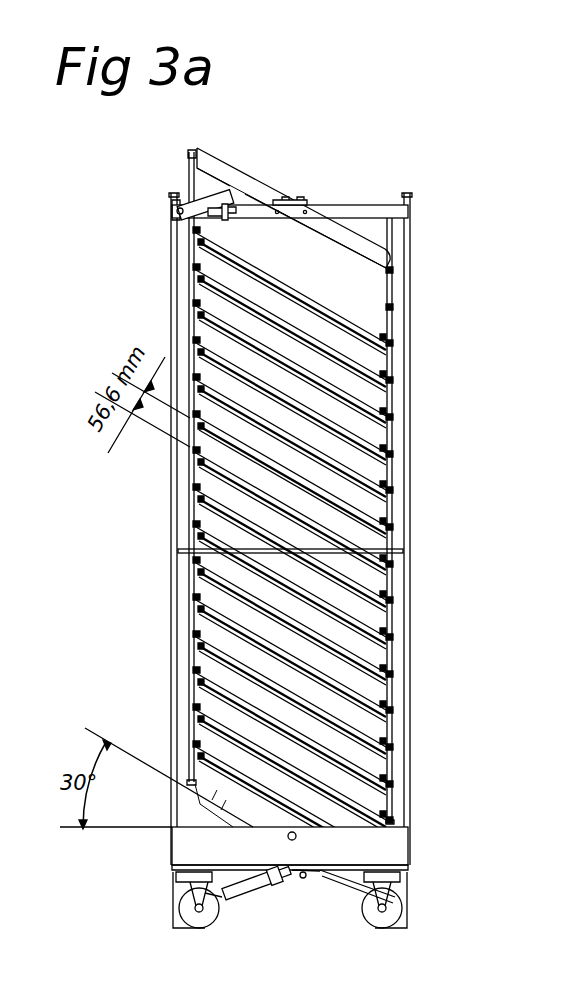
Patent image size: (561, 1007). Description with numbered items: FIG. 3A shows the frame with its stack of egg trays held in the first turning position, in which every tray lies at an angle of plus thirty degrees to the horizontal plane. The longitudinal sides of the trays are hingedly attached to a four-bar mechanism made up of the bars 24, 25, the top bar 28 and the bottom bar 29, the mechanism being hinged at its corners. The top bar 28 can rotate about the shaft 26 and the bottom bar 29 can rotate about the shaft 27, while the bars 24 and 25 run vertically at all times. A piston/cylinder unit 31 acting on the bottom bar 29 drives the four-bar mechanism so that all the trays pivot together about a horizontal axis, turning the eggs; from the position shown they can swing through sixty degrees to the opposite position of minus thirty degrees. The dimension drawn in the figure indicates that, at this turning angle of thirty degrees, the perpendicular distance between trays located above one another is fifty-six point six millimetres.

The bar 24 is at (393, 513).
The bar 25 is at (192, 531).
The shaft 26 is at (289, 199).
The shaft 27 is at (296, 838).
The top bar 28 is at (244, 184).
The bottom bar 29 is at (388, 896).
The actuating cylinder 31 is at (205, 896).